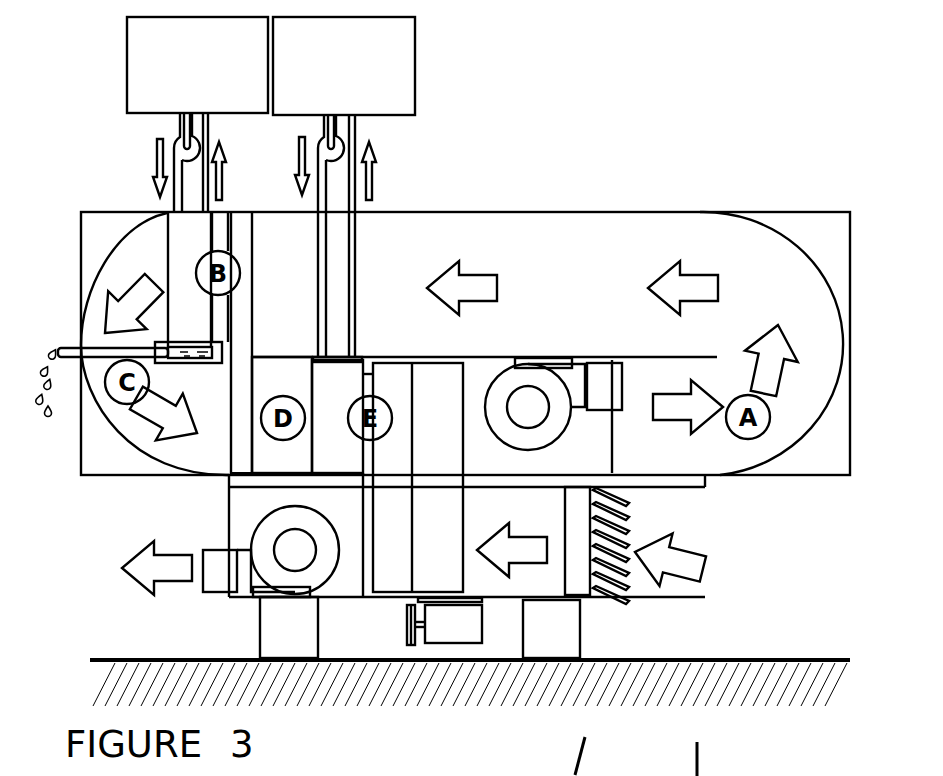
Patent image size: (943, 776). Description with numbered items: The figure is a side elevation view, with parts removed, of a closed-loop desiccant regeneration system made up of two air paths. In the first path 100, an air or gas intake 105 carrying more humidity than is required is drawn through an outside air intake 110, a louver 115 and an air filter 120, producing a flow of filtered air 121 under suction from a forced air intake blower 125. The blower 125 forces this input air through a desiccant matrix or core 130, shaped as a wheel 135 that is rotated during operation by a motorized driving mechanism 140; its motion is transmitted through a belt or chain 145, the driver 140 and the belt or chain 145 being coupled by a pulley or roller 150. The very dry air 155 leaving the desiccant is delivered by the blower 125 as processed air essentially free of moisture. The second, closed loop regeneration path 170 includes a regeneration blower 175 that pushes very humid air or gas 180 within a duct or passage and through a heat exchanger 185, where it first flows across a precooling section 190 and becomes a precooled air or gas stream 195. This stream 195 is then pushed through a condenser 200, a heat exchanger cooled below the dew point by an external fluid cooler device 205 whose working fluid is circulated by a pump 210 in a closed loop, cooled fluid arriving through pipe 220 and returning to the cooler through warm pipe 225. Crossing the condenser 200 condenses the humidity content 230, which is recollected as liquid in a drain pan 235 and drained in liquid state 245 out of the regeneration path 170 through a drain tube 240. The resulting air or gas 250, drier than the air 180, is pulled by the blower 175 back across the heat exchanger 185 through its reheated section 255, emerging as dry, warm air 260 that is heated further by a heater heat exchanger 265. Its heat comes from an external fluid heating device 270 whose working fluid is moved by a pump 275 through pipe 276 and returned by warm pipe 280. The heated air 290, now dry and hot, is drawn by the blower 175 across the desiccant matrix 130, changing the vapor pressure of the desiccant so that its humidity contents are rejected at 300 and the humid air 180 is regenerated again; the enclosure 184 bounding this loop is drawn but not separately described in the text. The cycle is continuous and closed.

The first path 100 is at (547, 523).
The air or gas intake 105 is at (682, 565).
The outside air intake 110 is at (638, 540).
The louver 115 is at (620, 587).
The air filter 120 is at (570, 585).
The flow of filtered air 121 is at (530, 573).
The forced air intake blower 125 is at (243, 580).
The desiccant matrix or core 130 is at (388, 583).
The wheel 135 is at (387, 527).
The motorized driving mechanism 140 is at (463, 633).
The belt or chain 145 is at (412, 547).
The pulley or roller 150 is at (407, 630).
The very dry air 155 is at (172, 570).
The closed loop regeneration path 170 is at (587, 290).
The regeneration blower 175 is at (537, 440).
The very humid air or gas 180 is at (475, 293).
The closed regeneration chamber 184 is at (823, 377).
The heat exchanger 185 is at (240, 352).
The precooling section 190 is at (247, 280).
The precooled air or gas stream 195 is at (215, 233).
The condenser 200 is at (165, 262).
The external fluid cooler device 205 is at (133, 58).
The pump 210 is at (173, 163).
The cooled fluid pipe 220 is at (177, 135).
The warm pipe 225 is at (210, 143).
The humidity content 230 is at (203, 363).
The drain pan 235 is at (227, 343).
The drain tube 240 is at (80, 352).
The condensate drops 245 is at (38, 402).
The air or gas 250 is at (170, 442).
The reheated section 255 is at (240, 410).
The dry and warm air 260 is at (302, 467).
The heater heat exchanger 265 is at (352, 380).
The external fluid heating device 270 is at (395, 87).
The pump 275 is at (318, 157).
The pipe 276 is at (317, 235).
The warm pipe 280 is at (357, 277).
The heated air 290 is at (367, 383).
The humidity rejection 300 is at (467, 442).